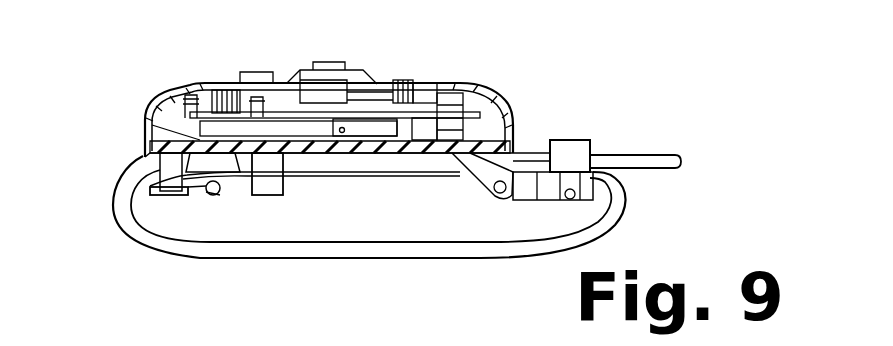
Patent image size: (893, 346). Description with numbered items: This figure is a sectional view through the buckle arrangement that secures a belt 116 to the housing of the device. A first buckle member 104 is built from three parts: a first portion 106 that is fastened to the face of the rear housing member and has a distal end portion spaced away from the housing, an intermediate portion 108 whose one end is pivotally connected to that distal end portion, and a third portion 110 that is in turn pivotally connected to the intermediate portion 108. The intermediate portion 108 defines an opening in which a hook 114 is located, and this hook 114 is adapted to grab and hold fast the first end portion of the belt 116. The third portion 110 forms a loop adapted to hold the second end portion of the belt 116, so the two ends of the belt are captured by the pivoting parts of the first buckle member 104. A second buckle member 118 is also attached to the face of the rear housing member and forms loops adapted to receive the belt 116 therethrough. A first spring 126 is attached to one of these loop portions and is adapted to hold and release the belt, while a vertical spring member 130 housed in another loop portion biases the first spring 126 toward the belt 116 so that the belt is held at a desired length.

The first buckle member 104 is at (602, 147).
The first portion 106 is at (477, 177).
The intermediate portion 108 is at (557, 206).
The third portion 110 is at (570, 138).
The hook 114 is at (570, 183).
The belt 116 is at (453, 250).
The second buckle member 118 is at (127, 152).
The first spring 126 is at (240, 183).
The vertical spring member 130 is at (210, 195).